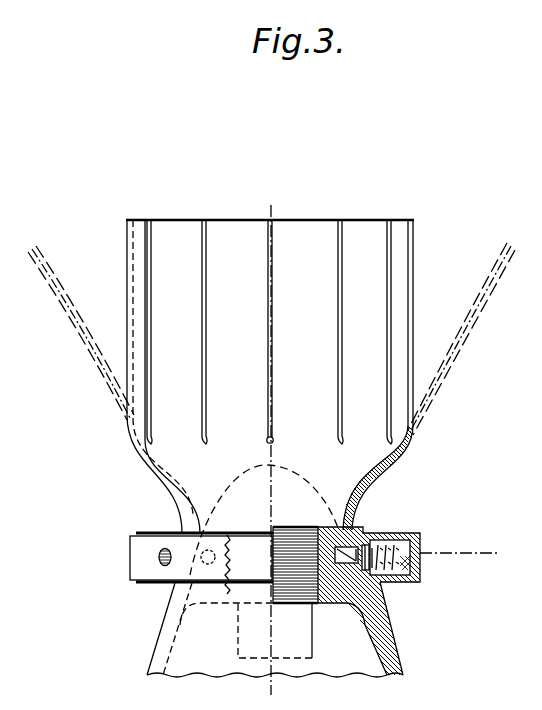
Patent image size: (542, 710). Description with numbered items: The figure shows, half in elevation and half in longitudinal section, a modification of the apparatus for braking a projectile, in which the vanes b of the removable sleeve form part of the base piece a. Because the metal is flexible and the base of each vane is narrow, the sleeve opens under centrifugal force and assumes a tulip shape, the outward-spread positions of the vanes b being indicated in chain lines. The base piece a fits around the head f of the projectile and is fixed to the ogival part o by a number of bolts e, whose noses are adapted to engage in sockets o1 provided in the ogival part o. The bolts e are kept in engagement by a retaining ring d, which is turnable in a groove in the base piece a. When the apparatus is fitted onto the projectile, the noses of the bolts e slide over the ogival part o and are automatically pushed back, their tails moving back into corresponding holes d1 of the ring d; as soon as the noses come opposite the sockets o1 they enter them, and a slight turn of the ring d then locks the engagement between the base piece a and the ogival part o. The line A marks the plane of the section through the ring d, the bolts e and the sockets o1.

The vanes b is at (135, 243).
The head f is at (291, 485).
The retaining ring d is at (156, 548).
The holes of the ring d1 is at (162, 559).
The bolts e is at (211, 550).
The base piece a is at (372, 529).
The section line A— A is at (386, 530).
The ogival part o is at (388, 621).
The sockets o1 is at (312, 602).